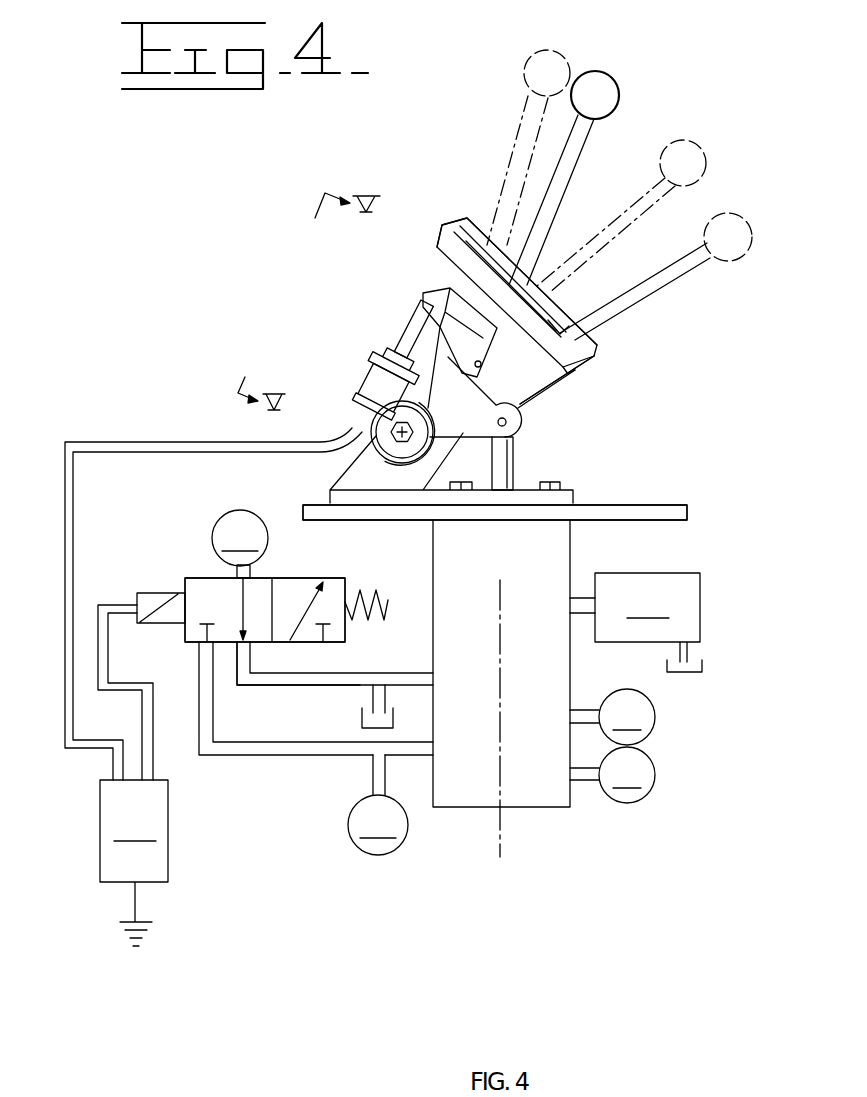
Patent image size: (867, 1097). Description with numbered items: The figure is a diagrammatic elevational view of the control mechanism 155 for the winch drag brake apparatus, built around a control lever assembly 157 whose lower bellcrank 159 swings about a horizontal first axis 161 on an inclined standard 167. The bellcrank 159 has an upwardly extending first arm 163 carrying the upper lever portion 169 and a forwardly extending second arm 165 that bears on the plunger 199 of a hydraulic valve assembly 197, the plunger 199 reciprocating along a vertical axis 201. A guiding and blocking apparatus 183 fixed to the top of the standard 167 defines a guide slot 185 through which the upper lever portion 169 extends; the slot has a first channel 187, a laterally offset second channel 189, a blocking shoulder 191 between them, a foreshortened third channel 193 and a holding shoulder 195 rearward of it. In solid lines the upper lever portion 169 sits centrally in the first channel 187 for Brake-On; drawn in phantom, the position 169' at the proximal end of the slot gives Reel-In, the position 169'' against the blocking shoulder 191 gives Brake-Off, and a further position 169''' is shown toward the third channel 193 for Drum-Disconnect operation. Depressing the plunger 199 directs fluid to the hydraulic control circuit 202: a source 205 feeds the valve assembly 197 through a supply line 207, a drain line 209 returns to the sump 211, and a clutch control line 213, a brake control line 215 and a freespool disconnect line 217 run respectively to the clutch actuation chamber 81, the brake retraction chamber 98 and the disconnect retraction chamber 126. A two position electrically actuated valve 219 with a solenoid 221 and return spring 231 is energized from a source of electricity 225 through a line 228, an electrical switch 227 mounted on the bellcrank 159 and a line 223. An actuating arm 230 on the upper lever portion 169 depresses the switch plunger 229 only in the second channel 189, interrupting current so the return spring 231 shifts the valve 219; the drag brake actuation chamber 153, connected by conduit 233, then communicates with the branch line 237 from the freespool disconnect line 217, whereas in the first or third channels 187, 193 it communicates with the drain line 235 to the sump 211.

The control mechanism 155 is at (320, 250).
The control lever assembly 157 is at (618, 74).
The upper lever portion phantom position (Reel-In) 169' is at (513, 147).
The upper lever portion phantom position (Brake-Off) 169'' is at (621, 213).
The control lever (alternate position) 169''' is at (665, 276).
The upper lever portion 169 is at (494, 281).
The guiding and blocking apparatus 183 is at (434, 244).
The guide slot 185 is at (482, 222).
The first channel 187 is at (512, 277).
The blocking shoulder 191 is at (530, 300).
The holding shoulder 195 is at (577, 328).
The third channel 193 is at (593, 362).
The second channel 189 is at (529, 306).
The first arm 163 is at (448, 357).
The bellcrank 159 is at (514, 400).
The second arm 165 is at (520, 423).
The plunger 199 is at (510, 462).
The electrical switch 227 is at (362, 367).
The depressible plunger 229 is at (392, 336).
The actuating arm 230 is at (410, 318).
The first axis 161 is at (390, 430).
The standard 167 is at (365, 468).
The line 228 is at (220, 447).
The hydraulic valve assembly 197 is at (558, 667).
The vertical axis 201 is at (500, 828).
The electrically actuated valve 219 is at (303, 574).
The return spring 231 is at (364, 594).
The solenoid 221 is at (150, 598).
The drag brake actuation chamber 153 is at (0, 0).
The conduit 233 is at (237, 570).
The line 223 is at (110, 650).
The drain line 209 is at (405, 678).
The drain line 235 is at (247, 680).
The sump 211 is at (362, 725).
The branch line 237 is at (250, 755).
The hydraulic control circuit 202 is at (293, 762).
The freespool disconnect line 217 is at (372, 778).
The disconnect retraction chamber 126 is at (0, 0).
The source of electricity 225 is at (0, 0).
The supply line 207 is at (582, 605).
The source of hydraulic fluid 205 is at (0, 0).
The clutch control line 213 is at (583, 712).
The clutch actuation chamber 81 is at (0, 0).
The brake control line 215 is at (583, 768).
The brake retraction chamber 98 is at (0, 0).